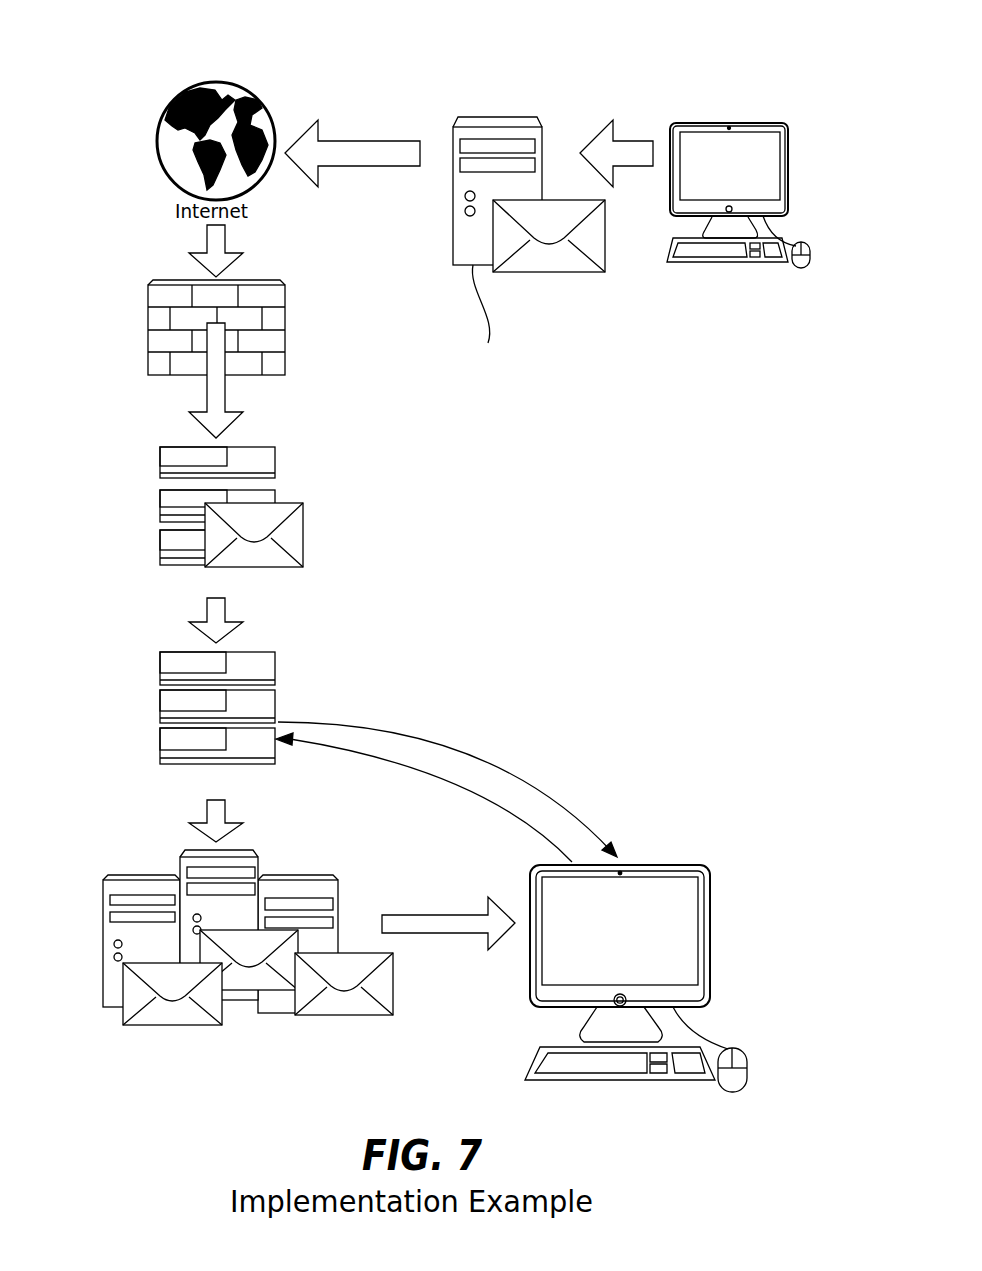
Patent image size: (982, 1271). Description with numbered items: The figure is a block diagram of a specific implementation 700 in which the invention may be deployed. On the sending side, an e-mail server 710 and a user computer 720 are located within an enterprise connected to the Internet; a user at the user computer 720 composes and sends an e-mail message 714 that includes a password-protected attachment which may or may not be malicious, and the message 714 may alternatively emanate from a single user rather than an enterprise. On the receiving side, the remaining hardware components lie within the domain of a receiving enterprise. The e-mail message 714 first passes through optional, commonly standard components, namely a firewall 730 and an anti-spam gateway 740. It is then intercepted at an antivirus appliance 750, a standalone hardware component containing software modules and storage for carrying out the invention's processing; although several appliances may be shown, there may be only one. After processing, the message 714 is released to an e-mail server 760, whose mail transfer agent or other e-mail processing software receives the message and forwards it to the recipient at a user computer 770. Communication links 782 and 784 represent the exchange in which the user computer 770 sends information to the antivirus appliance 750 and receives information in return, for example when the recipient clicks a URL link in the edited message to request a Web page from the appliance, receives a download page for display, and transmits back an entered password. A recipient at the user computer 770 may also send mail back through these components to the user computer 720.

The specific implementation 700 is at (118, 86).
The e-mail server 710 is at (453, 247).
The e-mail message 714 is at (550, 272).
The user computer 720 is at (744, 123).
The firewall 730 is at (148, 323).
The anti-spam gateway 740 is at (160, 455).
The antivirus appliance 750 is at (160, 737).
The e-mail server 760 is at (300, 883).
The user computer 770 is at (712, 890).
The communication link 782 is at (460, 786).
The communication link 784 is at (487, 762).